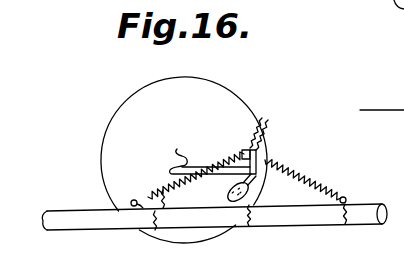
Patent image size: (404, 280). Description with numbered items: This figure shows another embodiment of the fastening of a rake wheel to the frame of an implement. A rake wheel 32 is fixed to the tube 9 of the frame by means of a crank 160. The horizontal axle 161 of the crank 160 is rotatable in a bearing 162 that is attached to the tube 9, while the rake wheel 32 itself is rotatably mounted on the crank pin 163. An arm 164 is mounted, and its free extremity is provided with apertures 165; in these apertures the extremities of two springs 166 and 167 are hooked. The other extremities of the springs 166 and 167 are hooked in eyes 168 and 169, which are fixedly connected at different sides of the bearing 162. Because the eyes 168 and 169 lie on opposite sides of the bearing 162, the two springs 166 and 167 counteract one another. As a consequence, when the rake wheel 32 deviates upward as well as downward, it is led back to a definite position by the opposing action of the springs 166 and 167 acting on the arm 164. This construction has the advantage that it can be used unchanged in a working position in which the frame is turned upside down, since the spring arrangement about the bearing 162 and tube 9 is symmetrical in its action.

The tube 9 is at (316, 227).
The rake wheel 32 is at (125, 100).
The crank 160 is at (229, 188).
The horizontal axle 161 is at (259, 186).
The bearing 162 is at (254, 226).
The crank pin 163 is at (204, 167).
The arm 164 is at (273, 156).
The apertures 165 is at (277, 106).
The spring 166 is at (155, 231).
The spring 167 is at (316, 178).
The eye 168 is at (131, 204).
The eye 169 is at (345, 226).